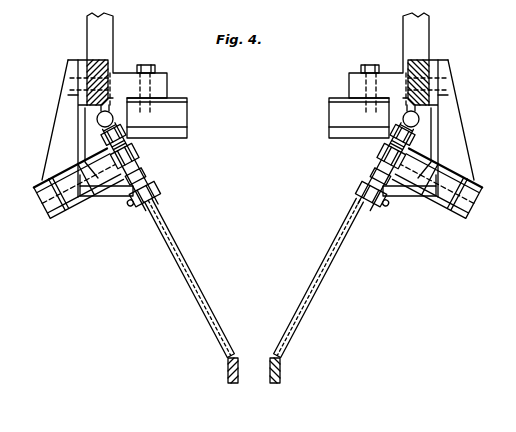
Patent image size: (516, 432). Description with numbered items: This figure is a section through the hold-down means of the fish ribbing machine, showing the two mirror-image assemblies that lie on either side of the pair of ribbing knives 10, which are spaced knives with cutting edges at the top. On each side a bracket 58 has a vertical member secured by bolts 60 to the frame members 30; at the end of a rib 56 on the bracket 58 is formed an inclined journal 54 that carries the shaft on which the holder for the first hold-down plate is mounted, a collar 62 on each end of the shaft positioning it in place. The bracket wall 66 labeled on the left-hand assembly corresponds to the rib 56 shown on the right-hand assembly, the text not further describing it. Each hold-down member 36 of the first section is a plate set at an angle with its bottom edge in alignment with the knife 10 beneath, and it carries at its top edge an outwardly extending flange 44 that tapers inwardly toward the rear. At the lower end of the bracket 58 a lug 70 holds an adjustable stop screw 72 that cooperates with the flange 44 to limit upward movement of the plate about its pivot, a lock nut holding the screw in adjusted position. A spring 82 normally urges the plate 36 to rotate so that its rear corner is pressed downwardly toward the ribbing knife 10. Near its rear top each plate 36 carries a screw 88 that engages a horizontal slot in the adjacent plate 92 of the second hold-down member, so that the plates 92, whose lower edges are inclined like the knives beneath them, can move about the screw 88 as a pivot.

The ribbing knives 10 is at (272, 383).
The frame members 30 is at (88, 24).
The hold-down member 36 is at (189, 287).
The flange 44 is at (125, 194).
The inclined journal 54 is at (78, 204).
The rib 56 is at (458, 165).
The bracket 58 is at (80, 124).
The bolts 60 is at (72, 78).
The collar 62 is at (53, 218).
The frame wall 66 is at (53, 159).
The lug 70 is at (131, 152).
The adjustable stop screw 72 is at (102, 140).
The spring 82 is at (97, 115).
The screw 88 is at (138, 212).
The plates 92 is at (180, 255).